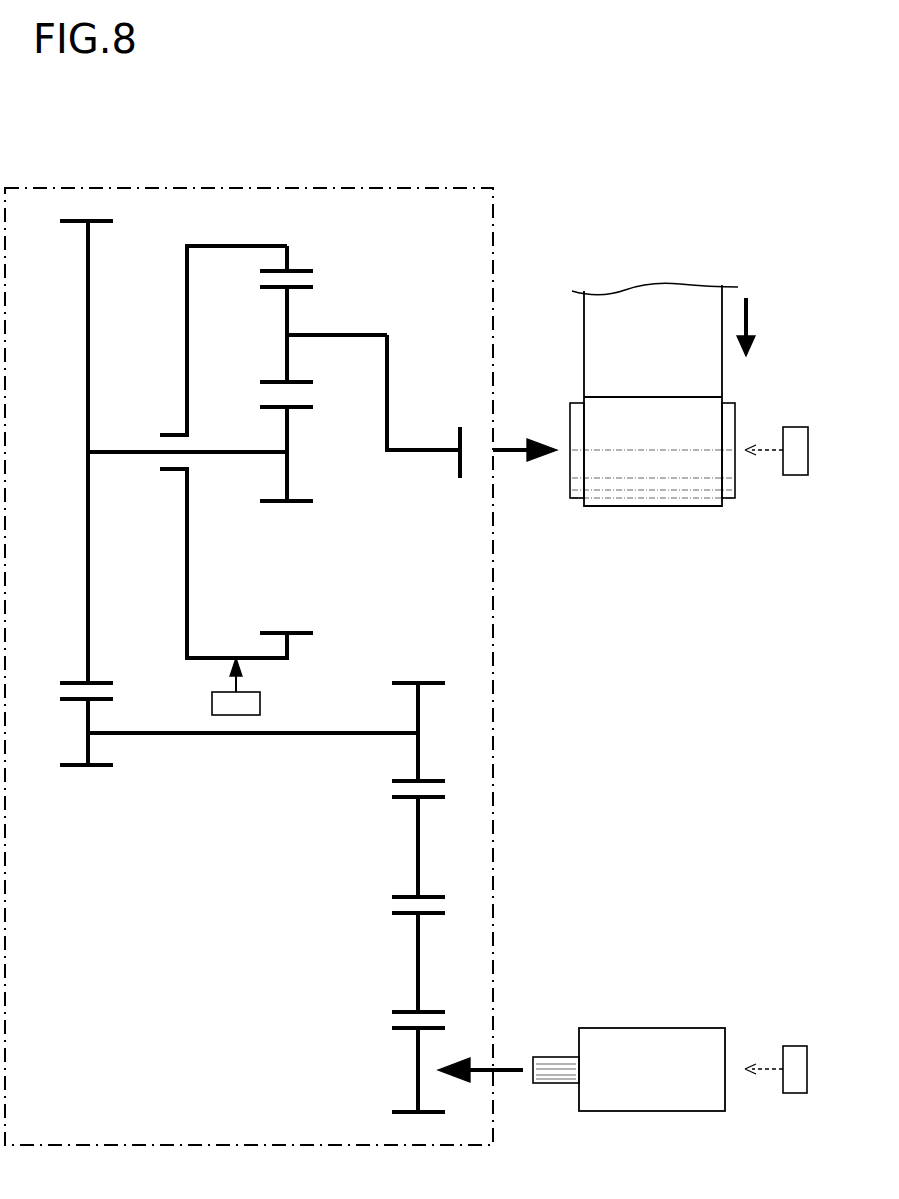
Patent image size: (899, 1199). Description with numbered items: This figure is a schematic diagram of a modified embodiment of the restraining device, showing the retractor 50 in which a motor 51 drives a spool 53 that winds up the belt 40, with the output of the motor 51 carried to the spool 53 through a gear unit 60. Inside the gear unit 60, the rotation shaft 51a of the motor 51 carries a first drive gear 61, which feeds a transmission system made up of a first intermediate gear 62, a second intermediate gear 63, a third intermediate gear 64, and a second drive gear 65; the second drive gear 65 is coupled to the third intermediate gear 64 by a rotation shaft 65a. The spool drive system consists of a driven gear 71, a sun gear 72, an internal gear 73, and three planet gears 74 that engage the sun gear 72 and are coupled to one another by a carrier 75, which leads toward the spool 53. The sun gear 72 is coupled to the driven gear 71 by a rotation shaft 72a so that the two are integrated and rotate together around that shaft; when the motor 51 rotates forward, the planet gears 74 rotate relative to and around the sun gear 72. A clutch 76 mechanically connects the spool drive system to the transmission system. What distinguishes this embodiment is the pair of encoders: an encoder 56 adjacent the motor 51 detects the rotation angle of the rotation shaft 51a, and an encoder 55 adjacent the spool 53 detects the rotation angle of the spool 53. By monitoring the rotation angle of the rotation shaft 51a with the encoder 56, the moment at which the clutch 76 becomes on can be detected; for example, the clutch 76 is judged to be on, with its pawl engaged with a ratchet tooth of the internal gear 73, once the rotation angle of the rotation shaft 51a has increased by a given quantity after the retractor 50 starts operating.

The belt 40 is at (584, 320).
The retractor 50 is at (612, 132).
The motor 51 is at (648, 1028).
The rotation shaft 51a is at (545, 1056).
The spool 53 is at (570, 419).
The encoder 55 is at (791, 427).
The encoder 56 is at (791, 1046).
The gear unit 60 is at (418, 188).
The first drive gear 61 is at (418, 1053).
The first intermediate gear 62 is at (418, 947).
The second intermediate gear 63 is at (418, 830).
The third intermediate gear 64 is at (418, 712).
The second drive gear 65 is at (86, 716).
The rotation shaft 65a is at (222, 738).
The driven gear 71 is at (88, 288).
The sun gear 72 is at (286, 477).
The rotation shaft 72a is at (124, 457).
The internal gear 73 is at (186, 288).
The planet gears 74 is at (286, 310).
The carrier 75 is at (388, 405).
The clutch 76 is at (262, 703).